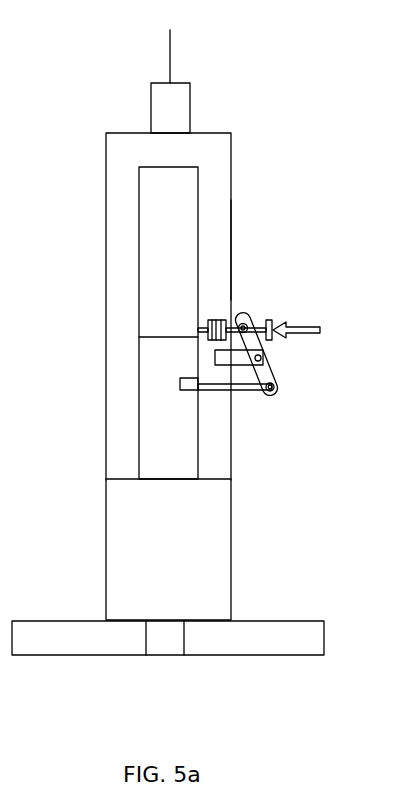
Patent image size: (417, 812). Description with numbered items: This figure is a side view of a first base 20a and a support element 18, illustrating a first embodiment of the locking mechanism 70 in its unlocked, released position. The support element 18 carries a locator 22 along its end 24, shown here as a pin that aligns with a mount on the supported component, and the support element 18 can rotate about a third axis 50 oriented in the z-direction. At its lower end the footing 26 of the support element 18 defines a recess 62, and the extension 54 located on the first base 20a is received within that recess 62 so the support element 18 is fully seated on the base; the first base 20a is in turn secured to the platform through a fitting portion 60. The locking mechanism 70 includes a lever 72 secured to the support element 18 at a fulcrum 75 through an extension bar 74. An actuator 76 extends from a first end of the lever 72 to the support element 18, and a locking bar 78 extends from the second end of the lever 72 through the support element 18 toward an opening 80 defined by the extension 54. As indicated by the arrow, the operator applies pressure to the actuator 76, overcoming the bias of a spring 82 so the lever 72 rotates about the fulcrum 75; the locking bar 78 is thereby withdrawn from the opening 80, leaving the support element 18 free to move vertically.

The third axis 50 is at (170, 50).
The locator 22 is at (190, 105).
The end 24 is at (211, 133).
The support element 18 is at (231, 250).
The footing 26 is at (120, 427).
The extension 54 is at (178, 440).
The recess 62 is at (159, 229).
The fitting portion 60 is at (173, 643).
The spring 82 is at (207, 324).
The lever 72 is at (262, 342).
The actuator 76 is at (254, 318).
The fulcrum 75 is at (262, 361).
The extension bar 74 is at (220, 354).
The opening 80 is at (180, 378).
The locking bar 78 is at (246, 392).
The locking mechanism 70 is at (323, 384).
The first base 20a is at (262, 549).